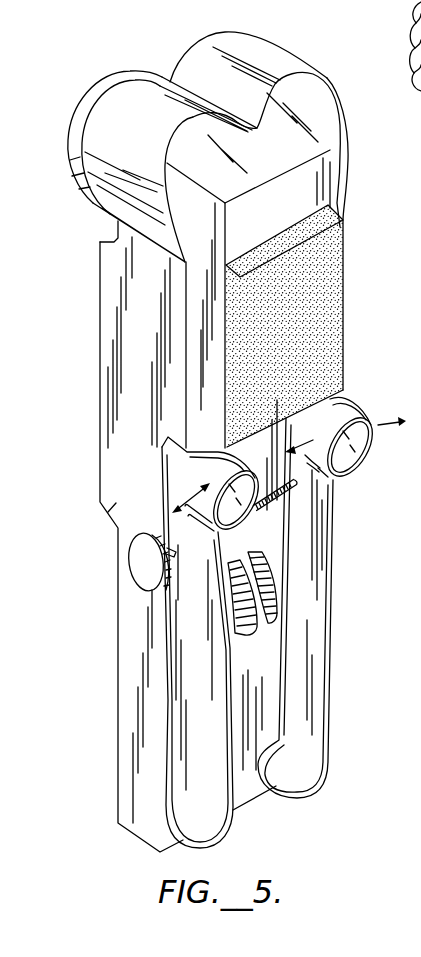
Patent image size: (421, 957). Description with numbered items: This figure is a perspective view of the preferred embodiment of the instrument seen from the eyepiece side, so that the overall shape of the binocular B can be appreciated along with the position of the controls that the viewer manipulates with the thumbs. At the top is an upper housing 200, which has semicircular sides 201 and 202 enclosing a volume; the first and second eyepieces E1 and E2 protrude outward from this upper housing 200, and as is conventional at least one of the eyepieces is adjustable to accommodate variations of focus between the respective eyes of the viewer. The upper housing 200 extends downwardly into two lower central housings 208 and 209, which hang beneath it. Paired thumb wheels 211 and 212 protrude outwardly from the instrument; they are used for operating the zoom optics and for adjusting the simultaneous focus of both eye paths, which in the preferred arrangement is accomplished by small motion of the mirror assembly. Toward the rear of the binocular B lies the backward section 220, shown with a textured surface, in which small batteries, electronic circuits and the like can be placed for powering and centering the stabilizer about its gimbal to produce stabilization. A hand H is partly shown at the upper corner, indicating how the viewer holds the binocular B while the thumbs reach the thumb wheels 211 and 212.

The upper housing 200 is at (283, 82).
The semicircular side 201 is at (115, 190).
The semicircular side 202 is at (351, 145).
The lower central housing 208 is at (104, 520).
The lower central housing 209 is at (338, 503).
The thumb wheel 211 is at (250, 628).
The thumb wheel 212 is at (277, 596).
The backward section 220 is at (320, 313).
The first eyepiece E1 is at (236, 518).
The second eyepiece E2 is at (360, 450).
The binocular B is at (78, 70).
The hand H is at (414, 82).